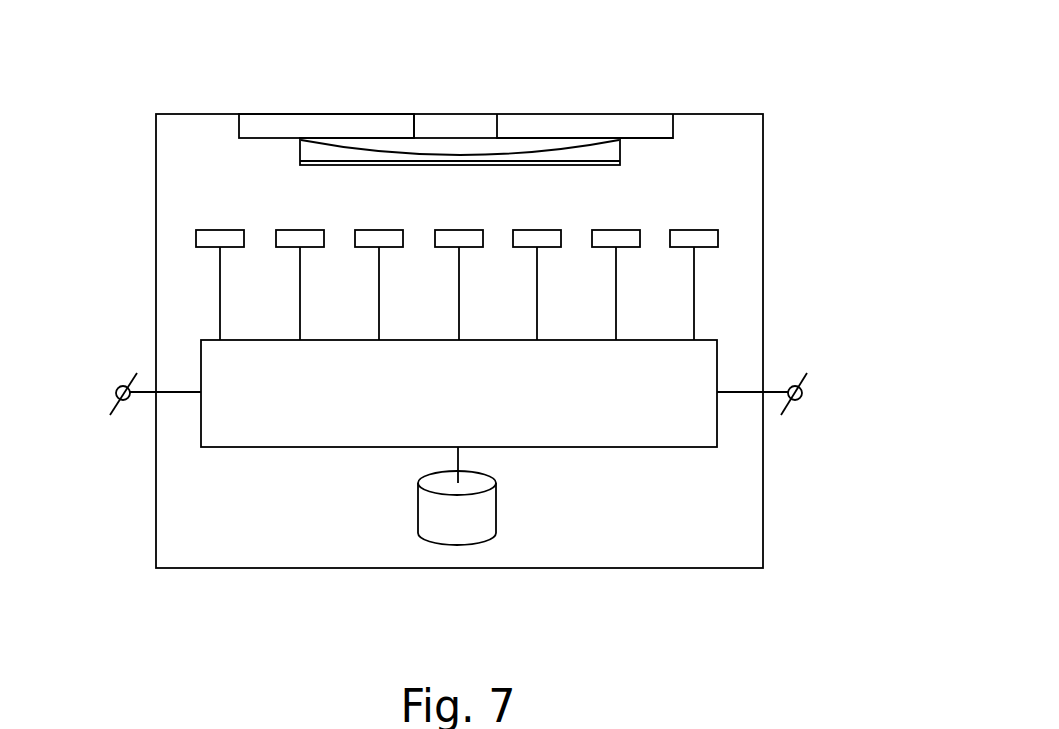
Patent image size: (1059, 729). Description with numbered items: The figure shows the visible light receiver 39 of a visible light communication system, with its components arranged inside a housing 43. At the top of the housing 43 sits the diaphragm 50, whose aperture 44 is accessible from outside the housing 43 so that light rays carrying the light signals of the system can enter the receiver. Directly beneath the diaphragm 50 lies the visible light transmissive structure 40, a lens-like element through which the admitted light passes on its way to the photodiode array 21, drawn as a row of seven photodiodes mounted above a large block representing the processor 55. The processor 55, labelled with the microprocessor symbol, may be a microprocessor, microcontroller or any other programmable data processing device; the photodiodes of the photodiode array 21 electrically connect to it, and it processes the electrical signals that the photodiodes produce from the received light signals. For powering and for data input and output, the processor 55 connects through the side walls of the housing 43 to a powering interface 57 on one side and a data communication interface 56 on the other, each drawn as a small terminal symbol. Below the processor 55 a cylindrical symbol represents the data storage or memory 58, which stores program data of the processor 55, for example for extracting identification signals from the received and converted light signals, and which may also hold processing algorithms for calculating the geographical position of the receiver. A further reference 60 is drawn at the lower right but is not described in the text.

The visible light receiver 39 is at (218, 98).
The aperture 44 is at (468, 123).
The visible light transmissive structure 40 is at (592, 153).
The diaphragm 50 is at (653, 123).
The photodiode array 21 is at (733, 213).
The housing 43 is at (764, 273).
The powering interface 57 is at (117, 388).
The data communication interface 56 is at (802, 389).
The processor 55 is at (653, 430).
The memory 58 is at (468, 523).
The connection line 60 is at (738, 728).